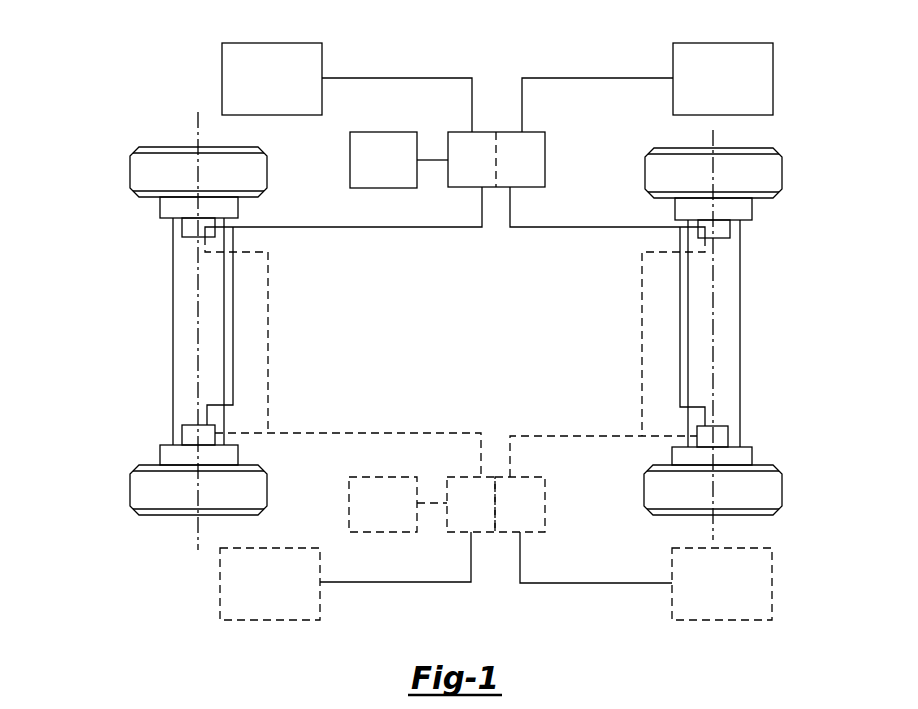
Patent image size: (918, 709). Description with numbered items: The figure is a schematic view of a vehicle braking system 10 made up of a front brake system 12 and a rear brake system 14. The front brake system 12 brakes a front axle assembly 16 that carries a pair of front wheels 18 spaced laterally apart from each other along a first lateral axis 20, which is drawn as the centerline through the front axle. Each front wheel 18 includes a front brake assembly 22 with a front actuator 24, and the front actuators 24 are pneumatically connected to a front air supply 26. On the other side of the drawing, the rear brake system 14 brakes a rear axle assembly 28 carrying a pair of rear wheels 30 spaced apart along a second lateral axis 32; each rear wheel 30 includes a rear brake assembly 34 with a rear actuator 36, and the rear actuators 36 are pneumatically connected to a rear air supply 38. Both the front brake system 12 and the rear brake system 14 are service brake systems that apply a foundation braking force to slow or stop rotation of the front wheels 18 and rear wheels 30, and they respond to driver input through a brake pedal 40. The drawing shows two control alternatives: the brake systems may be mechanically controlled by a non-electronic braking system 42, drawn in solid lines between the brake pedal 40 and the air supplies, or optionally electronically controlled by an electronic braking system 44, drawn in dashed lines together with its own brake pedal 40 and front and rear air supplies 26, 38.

The vehicle braking system 10 is at (829, 162).
The front brake system 12 is at (80, 206).
The rear brake system 14 is at (847, 388).
The front axle assembly 16 is at (186, 374).
The front wheels 18 is at (194, 190).
The first lateral axis 20 is at (198, 543).
The front brake assembly 22 is at (238, 209).
The front actuator 24 is at (182, 232).
The front air supply 26 is at (290, 43).
The rear axle assembly 28 is at (740, 370).
The rear wheels 30 is at (710, 190).
The second lateral axis 32 is at (713, 531).
The rear brake assembly 34 is at (752, 207).
The rear actuator 36 is at (730, 232).
The rear air supply 38 is at (737, 43).
The brake pedal 40 is at (398, 132).
The non-electronic braking system (NEBS) 42 is at (530, 132).
The electronic braking system (EBS) 44 is at (530, 532).